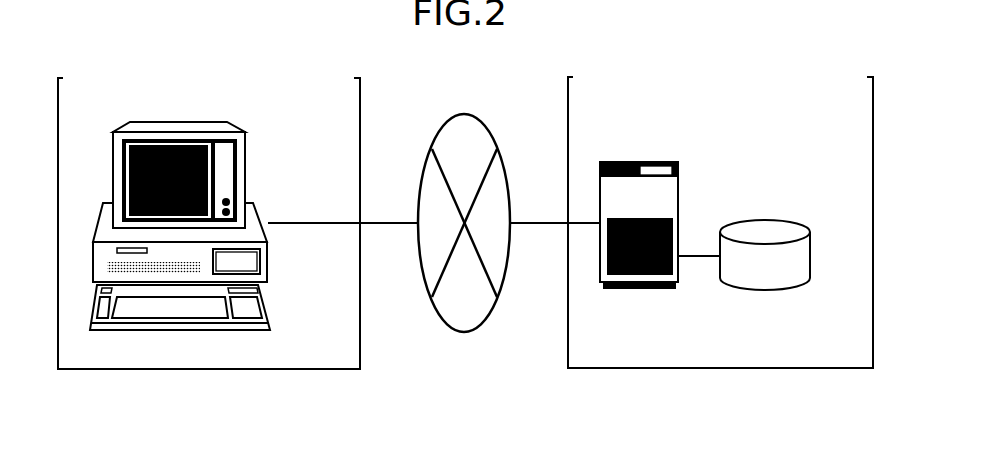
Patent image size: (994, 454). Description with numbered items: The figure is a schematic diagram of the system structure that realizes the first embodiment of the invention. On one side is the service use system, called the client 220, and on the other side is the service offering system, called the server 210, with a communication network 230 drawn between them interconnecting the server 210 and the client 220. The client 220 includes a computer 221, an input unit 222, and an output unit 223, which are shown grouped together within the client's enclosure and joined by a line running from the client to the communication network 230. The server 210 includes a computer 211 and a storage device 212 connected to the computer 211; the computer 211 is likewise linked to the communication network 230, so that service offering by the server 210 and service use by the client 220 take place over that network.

The service offering system (server) 210 is at (688, 368).
The computer 211 is at (678, 170).
The storage device 212 is at (765, 290).
The service use system (client) 220 is at (270, 369).
The computer 221 is at (268, 262).
The input unit 222 is at (268, 305).
The output unit 223 is at (245, 162).
The communication network 230 is at (464, 332).